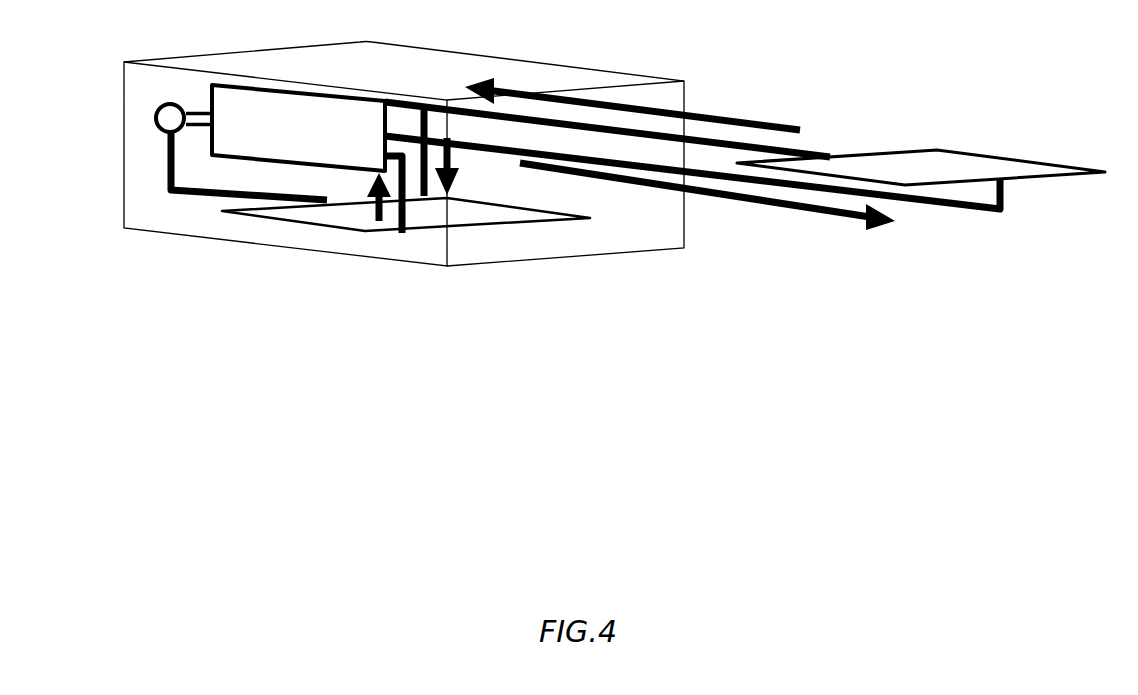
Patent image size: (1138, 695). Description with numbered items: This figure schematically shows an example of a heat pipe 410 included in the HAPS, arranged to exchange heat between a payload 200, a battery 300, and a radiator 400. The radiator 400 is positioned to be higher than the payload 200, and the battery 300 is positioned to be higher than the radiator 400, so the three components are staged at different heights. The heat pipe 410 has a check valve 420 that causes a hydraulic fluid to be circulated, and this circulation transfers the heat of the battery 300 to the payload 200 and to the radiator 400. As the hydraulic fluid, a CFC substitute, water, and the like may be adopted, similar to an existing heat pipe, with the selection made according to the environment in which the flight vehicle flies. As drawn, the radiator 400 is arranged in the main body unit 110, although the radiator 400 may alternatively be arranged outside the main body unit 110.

The main body unit 110 is at (180, 237).
The payload 200 is at (483, 222).
The battery 300 is at (967, 162).
The radiator 400 is at (273, 100).
The heat pipe 410 is at (170, 172).
The check valve 420 is at (170, 119).